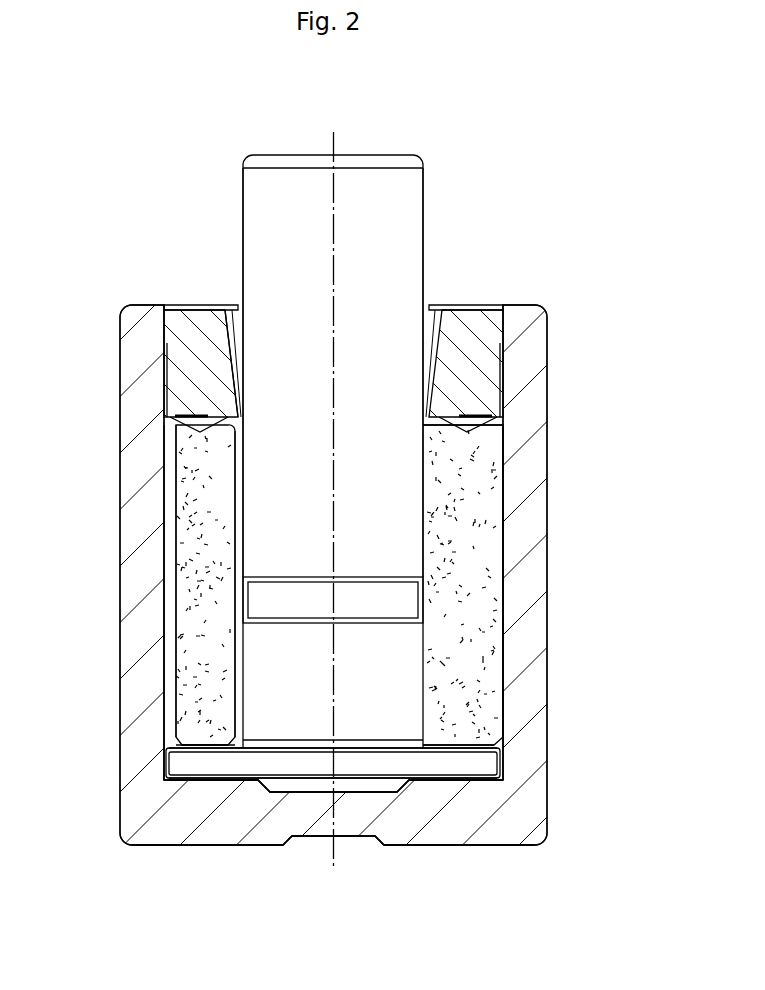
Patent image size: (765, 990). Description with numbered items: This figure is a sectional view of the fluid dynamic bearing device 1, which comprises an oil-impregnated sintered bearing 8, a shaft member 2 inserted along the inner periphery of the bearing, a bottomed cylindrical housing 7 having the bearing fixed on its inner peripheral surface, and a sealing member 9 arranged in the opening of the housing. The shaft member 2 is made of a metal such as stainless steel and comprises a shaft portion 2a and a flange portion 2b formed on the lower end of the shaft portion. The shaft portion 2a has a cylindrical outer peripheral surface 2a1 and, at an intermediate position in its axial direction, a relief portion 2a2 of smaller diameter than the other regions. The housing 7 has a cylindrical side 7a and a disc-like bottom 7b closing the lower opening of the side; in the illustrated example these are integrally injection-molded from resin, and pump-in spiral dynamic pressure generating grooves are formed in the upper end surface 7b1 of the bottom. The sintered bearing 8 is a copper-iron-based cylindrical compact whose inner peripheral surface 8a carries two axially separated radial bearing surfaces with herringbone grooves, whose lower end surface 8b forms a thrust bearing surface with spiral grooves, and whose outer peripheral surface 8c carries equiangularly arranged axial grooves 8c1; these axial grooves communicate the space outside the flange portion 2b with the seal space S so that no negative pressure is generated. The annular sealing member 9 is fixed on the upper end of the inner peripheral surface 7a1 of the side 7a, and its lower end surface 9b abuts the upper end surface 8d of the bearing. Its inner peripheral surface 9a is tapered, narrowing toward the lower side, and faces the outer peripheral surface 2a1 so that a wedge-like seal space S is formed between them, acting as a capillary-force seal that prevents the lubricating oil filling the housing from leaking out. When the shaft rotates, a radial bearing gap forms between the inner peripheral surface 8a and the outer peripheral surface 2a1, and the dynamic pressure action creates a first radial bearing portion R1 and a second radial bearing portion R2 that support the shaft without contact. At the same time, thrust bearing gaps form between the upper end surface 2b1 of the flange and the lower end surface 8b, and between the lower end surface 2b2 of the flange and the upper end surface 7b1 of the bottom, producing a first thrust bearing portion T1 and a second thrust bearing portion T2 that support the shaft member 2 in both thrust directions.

The fluid dynamic bearing device 1 is at (566, 233).
The shaft member 2 is at (428, 198).
The shaft portion 2a is at (364, 185).
The outer peripheral surface 2a1 is at (425, 454).
The relief portion 2a2 is at (425, 599).
The flange portion 2b is at (478, 765).
The upper end surface 2b1 is at (450, 746).
The lower end surface 2b2 is at (450, 781).
The housing 7 is at (116, 345).
The side 7a is at (158, 556).
The inner peripheral surface 7a1 is at (503, 563).
The bottom 7b is at (394, 828).
The upper end surface 7b1 is at (230, 779).
The oil-impregnated sintered bearing 8 is at (480, 510).
The inner peripheral surface 8a is at (424, 507).
The lower end surface 8b is at (217, 752).
The outer peripheral surface 8c is at (506, 680).
The axial grooves 8c1 is at (172, 604).
The upper end surface 8d is at (445, 418).
The sealing member 9 is at (188, 333).
The inner peripheral surface 9a is at (232, 350).
The lower end surface 9b is at (223, 420).
The seal space S is at (431, 352).
The first radial bearing portion R1 is at (222, 500).
The second radial bearing portion R2 is at (222, 681).
The first thrust bearing portion T1 is at (206, 744).
The second thrust bearing portion T2 is at (206, 788).